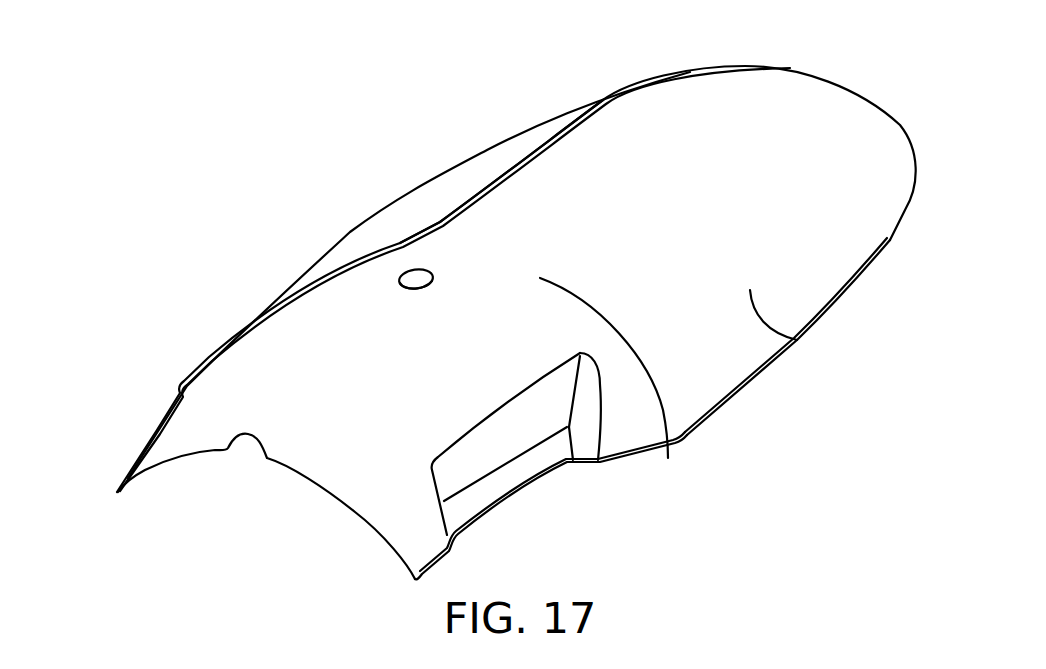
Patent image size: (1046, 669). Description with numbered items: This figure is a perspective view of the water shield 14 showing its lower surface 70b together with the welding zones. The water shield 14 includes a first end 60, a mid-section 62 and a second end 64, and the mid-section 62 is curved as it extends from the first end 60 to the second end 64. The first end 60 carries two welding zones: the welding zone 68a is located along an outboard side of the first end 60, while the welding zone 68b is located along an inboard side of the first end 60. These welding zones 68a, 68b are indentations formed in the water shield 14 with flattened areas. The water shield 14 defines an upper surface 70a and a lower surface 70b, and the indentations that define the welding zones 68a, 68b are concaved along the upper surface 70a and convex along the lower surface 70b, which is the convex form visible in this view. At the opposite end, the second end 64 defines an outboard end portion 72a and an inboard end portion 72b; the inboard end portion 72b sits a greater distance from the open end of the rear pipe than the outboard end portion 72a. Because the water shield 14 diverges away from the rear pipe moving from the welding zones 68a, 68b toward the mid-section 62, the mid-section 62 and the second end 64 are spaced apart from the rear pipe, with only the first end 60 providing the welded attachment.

The water shield 14 is at (300, 203).
The first end 60 is at (318, 480).
The mid-section 62 is at (557, 406).
The second end 64 is at (832, 102).
The welding zone 68a is at (160, 427).
The welding zone 68b is at (500, 480).
The upper surface 70a is at (407, 208).
The lower surface 70b is at (797, 340).
The outboard end portion 72a is at (479, 190).
The inboard end portion 72b is at (890, 240).